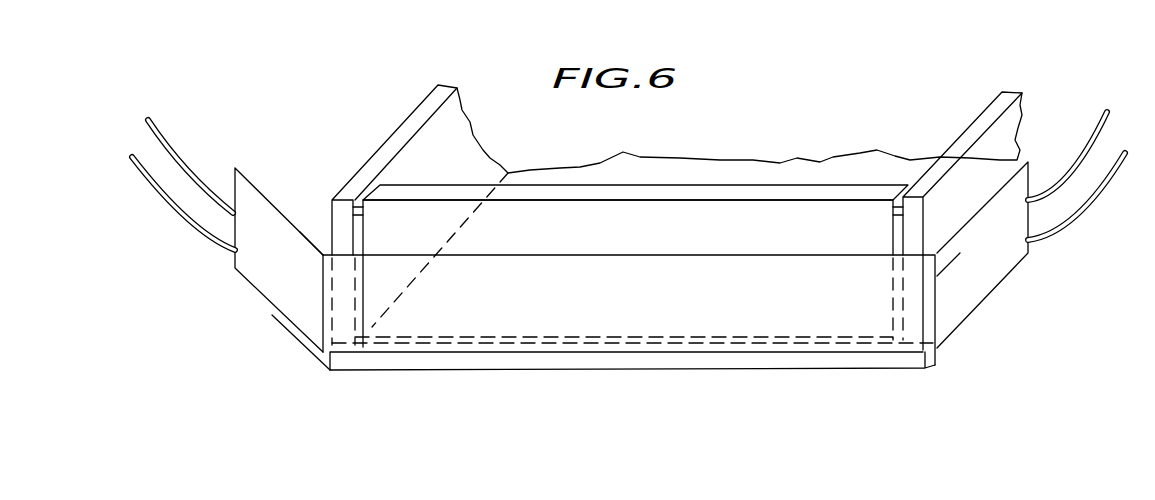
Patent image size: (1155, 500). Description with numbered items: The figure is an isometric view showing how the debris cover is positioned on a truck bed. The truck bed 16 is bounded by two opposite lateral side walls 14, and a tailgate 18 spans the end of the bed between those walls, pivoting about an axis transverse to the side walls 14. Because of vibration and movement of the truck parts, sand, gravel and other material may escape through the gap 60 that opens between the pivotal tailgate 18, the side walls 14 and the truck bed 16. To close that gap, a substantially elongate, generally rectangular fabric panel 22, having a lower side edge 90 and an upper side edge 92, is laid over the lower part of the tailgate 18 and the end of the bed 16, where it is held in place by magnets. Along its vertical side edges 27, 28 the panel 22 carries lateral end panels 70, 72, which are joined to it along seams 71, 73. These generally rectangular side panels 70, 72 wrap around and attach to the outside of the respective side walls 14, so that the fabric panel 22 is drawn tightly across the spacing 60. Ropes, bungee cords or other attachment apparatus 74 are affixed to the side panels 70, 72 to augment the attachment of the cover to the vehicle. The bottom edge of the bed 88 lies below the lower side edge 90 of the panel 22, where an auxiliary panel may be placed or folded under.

The side walls 14 is at (432, 102).
The truck bed 16 is at (615, 173).
The tailgate 18 is at (723, 217).
The panel 22 is at (503, 330).
The vertical side edge 27 is at (320, 317).
The vertical side edge 28 is at (930, 307).
The gap 60 is at (917, 220).
The side panel 70 is at (973, 293).
The seam 71 is at (937, 281).
The side panel 72 is at (283, 293).
The seam 73 is at (320, 280).
The attachment apparatus 74 is at (1072, 172).
The bottom edge of bed 88 is at (480, 360).
The lower side edge 90 is at (597, 355).
The upper side edge 92 is at (737, 255).